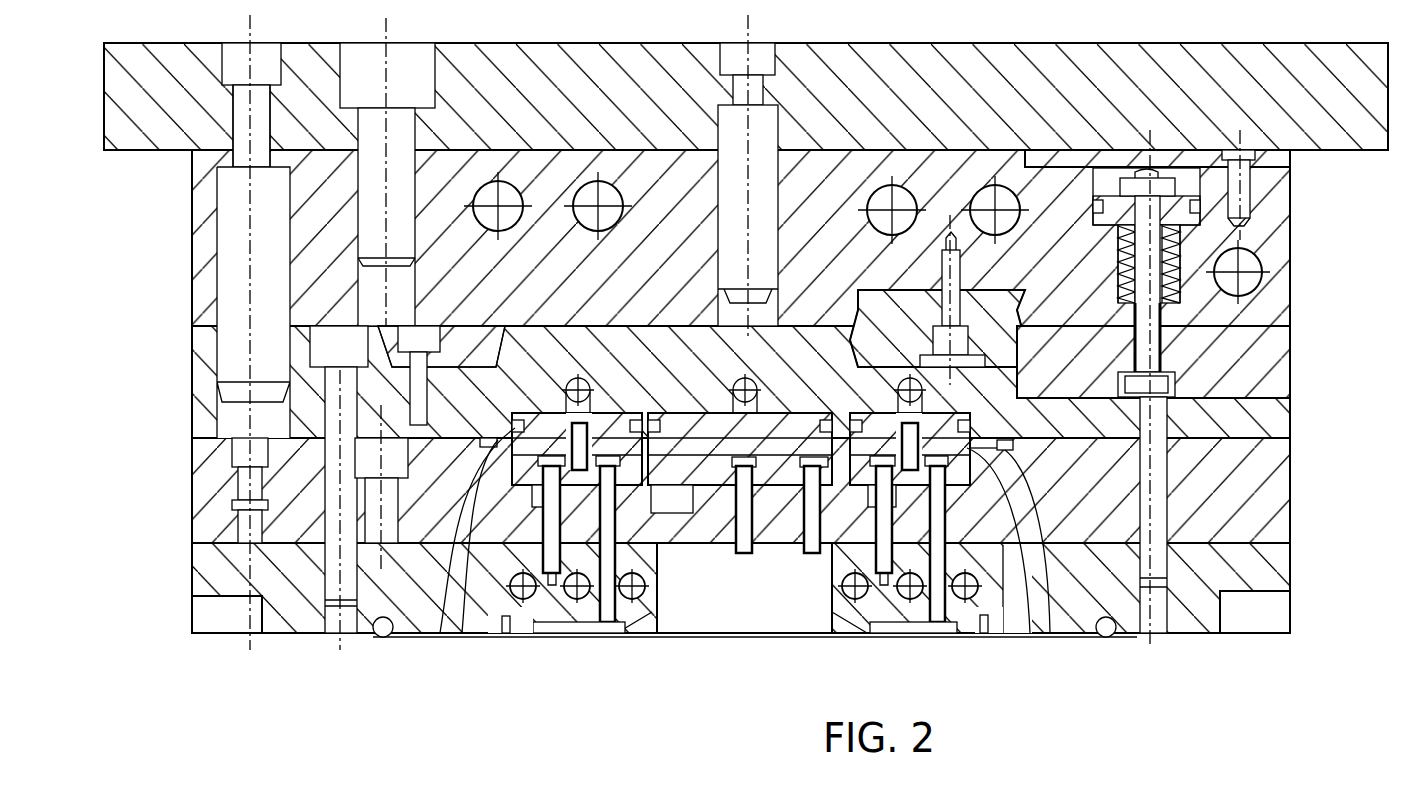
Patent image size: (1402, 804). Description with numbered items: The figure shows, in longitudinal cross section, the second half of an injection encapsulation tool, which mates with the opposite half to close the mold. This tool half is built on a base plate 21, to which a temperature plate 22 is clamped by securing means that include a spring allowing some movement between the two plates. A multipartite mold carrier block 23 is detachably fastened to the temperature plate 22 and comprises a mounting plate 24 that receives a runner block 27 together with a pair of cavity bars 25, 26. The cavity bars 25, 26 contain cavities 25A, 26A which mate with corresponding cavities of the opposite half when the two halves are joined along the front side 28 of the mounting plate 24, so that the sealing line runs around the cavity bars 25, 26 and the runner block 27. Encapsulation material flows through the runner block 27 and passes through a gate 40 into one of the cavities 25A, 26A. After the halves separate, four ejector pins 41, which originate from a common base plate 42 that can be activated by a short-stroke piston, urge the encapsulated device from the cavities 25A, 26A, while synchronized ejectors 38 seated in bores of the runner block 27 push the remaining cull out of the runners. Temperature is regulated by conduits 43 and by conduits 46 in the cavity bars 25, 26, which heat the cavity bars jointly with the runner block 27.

The base plate 21 is at (186, 65).
The temperature plate 22 is at (196, 233).
The multipartite mold carrier block 23 is at (1272, 468).
The mounting plate 24 is at (205, 568).
The cavity bar 25 is at (993, 618).
The cavity 25A is at (920, 630).
The cavity bar 26 is at (500, 614).
The cavity 26A is at (598, 634).
The runner block 27 is at (741, 604).
The front side 28 is at (288, 630).
The ejector 38 is at (813, 553).
The gate 40 is at (636, 634).
The ejector pin 41 is at (613, 645).
The common base plate 42 is at (462, 633).
The conduits 43 is at (440, 633).
The conduits 46 is at (523, 600).